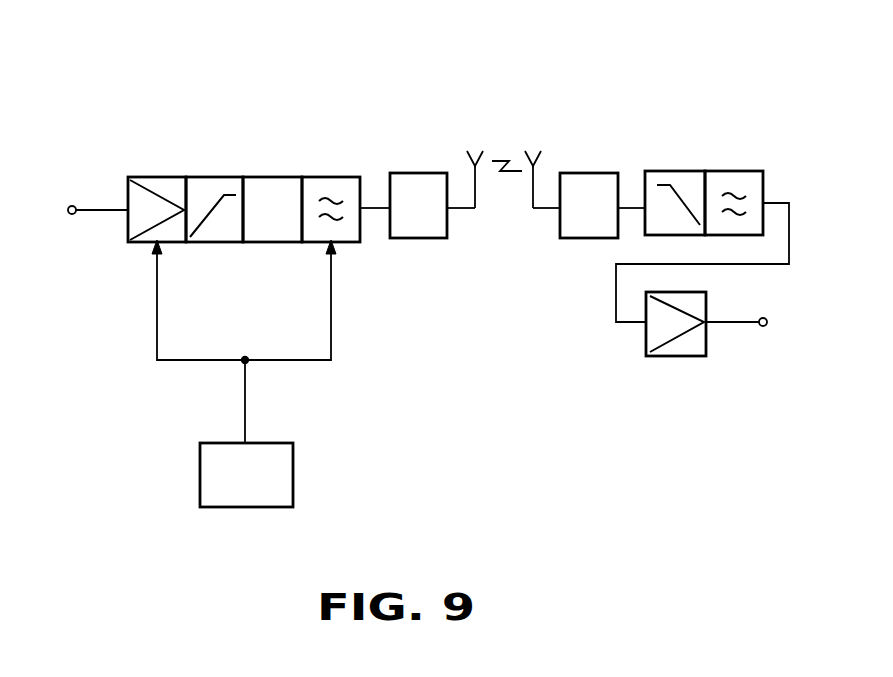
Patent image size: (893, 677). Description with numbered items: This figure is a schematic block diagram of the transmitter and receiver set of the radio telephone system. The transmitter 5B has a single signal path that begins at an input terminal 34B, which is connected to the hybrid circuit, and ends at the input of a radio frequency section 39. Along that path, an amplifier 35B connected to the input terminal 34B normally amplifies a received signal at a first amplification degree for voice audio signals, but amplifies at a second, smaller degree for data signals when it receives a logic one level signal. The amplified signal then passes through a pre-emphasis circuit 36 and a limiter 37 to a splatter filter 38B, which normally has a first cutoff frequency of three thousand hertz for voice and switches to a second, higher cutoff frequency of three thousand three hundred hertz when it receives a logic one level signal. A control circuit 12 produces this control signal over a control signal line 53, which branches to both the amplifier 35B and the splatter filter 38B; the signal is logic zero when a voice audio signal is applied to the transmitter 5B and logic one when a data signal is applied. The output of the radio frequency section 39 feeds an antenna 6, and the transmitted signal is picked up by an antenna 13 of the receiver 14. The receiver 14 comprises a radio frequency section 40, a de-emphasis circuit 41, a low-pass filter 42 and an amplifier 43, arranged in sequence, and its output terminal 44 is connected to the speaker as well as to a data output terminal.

The transmitter 5B is at (198, 65).
The receiver 14 is at (680, 62).
The input terminal 34B is at (71, 216).
The amplifier 35B is at (146, 244).
The pre-emphasis circuit 36 is at (224, 243).
The limiter 37 is at (278, 243).
The splatter filter 38B is at (328, 177).
The radio frequency section 39 is at (422, 241).
The transmitting antenna 6 is at (471, 152).
The receiving antenna 13 is at (532, 151).
The radio frequency section 40 is at (588, 240).
The de-emphasis circuit 41 is at (668, 171).
The low-pass filter 42 is at (730, 171).
The amplifier 43 is at (687, 356).
The output terminal 44 is at (764, 327).
The control signal line 53 is at (246, 402).
The control circuit 12 is at (249, 509).